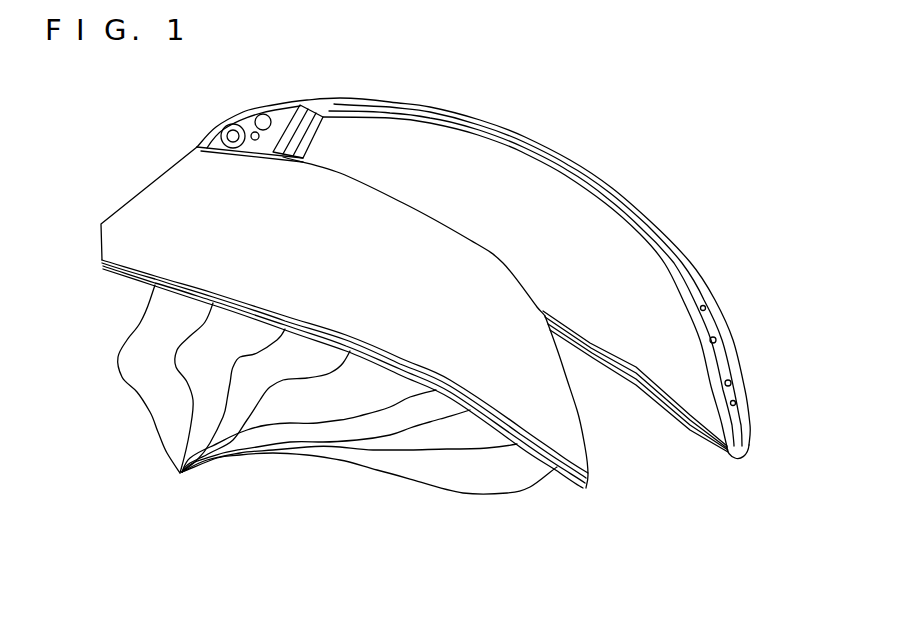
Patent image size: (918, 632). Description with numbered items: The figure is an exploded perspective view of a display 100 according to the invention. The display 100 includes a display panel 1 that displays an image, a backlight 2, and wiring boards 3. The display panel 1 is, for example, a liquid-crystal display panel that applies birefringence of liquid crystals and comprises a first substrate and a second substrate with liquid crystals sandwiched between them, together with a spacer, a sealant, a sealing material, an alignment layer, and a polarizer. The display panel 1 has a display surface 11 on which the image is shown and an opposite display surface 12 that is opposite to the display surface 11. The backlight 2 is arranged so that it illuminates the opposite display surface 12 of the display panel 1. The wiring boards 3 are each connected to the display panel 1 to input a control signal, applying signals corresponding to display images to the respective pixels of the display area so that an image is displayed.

The display 100 is at (630, 493).
The display panel 1 is at (173, 180).
The display surface 11 is at (118, 252).
The opposite display surface 12 is at (566, 385).
The backlight 2 is at (735, 323).
The wiring boards 3 is at (181, 475).